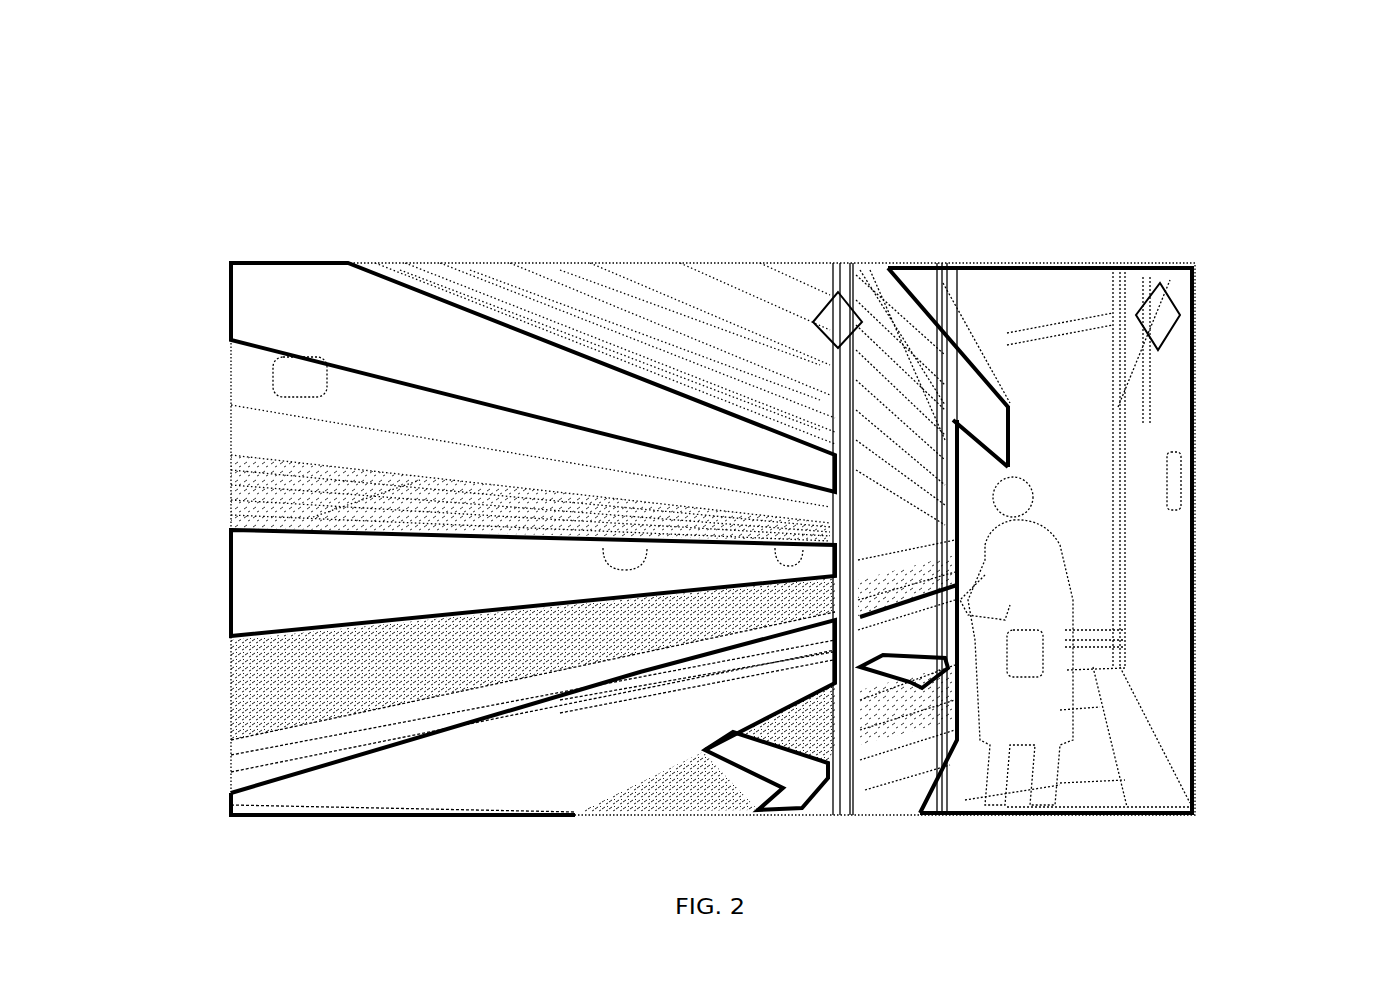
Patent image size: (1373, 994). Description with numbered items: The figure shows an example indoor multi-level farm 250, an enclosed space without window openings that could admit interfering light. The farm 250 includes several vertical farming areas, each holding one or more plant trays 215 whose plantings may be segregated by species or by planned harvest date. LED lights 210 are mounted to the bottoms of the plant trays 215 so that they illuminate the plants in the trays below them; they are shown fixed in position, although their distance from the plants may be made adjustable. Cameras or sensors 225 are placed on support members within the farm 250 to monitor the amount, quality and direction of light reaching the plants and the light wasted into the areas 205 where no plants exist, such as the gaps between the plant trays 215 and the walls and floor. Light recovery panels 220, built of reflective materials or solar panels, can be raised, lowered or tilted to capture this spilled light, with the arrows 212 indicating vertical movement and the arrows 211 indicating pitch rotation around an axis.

The indoor multi-level farm environment 250 is at (180, 68).
The areas not containing plants 205 is at (1080, 393).
The LED lights 210 is at (740, 355).
The arrows indicating pitch rotation 211 is at (455, 277).
The arrows indicating vertical movement 212 is at (410, 295).
The plant trays 215 is at (880, 307).
The light recovery panels 220 is at (465, 777).
The cameras and/or sensors 225 is at (843, 318).